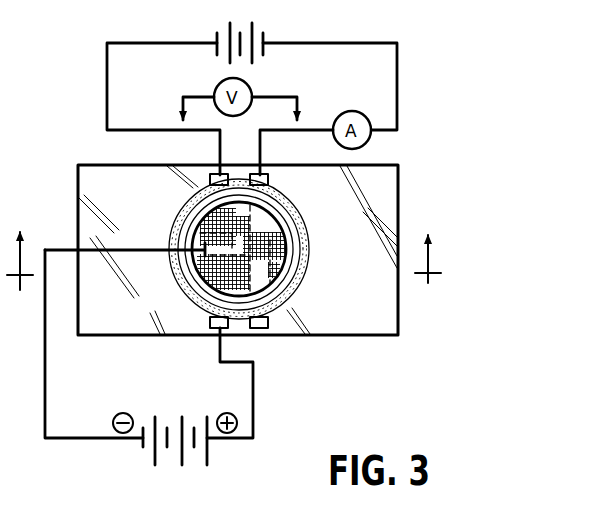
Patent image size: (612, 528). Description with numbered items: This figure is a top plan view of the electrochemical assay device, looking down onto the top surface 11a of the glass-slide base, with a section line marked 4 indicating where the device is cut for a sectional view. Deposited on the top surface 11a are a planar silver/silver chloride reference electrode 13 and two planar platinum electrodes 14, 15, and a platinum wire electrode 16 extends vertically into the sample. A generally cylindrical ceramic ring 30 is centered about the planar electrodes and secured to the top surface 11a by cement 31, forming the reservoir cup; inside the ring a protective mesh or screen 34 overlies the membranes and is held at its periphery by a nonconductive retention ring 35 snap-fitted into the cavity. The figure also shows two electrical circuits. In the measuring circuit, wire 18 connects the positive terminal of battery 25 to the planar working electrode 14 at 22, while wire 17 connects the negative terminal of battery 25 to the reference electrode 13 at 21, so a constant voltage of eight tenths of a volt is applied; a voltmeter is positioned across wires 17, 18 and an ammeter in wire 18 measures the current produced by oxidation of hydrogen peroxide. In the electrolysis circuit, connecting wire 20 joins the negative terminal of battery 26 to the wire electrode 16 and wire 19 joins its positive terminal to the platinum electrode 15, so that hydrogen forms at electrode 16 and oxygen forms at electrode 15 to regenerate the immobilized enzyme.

The top surface 11a is at (391, 195).
The section line 4- 4 is at (224, 275).
The planar silver/silver chloride reference electrode 13 is at (210, 219).
The planar platinum working electrode 14 is at (265, 223).
The planar platinum electrode 15 is at (217, 282).
The platinum wire electrode 16 is at (193, 233).
The wire 17 is at (107, 108).
The wire 18 is at (313, 128).
The wire 19 is at (257, 378).
The connecting wire 20 is at (45, 372).
The connection point 21 is at (217, 174).
The connection point 22 is at (268, 177).
The battery 25 is at (264, 25).
The battery 26 is at (200, 470).
The ceramic ring 30 is at (297, 291).
The cement 31 is at (313, 247).
The protective means 34 is at (292, 258).
The retention ring 35 is at (302, 237).